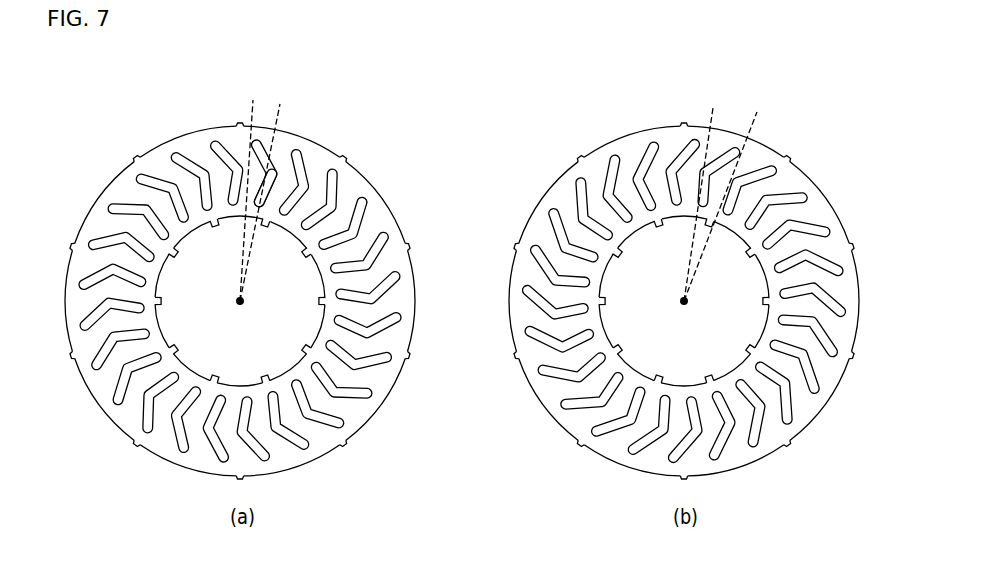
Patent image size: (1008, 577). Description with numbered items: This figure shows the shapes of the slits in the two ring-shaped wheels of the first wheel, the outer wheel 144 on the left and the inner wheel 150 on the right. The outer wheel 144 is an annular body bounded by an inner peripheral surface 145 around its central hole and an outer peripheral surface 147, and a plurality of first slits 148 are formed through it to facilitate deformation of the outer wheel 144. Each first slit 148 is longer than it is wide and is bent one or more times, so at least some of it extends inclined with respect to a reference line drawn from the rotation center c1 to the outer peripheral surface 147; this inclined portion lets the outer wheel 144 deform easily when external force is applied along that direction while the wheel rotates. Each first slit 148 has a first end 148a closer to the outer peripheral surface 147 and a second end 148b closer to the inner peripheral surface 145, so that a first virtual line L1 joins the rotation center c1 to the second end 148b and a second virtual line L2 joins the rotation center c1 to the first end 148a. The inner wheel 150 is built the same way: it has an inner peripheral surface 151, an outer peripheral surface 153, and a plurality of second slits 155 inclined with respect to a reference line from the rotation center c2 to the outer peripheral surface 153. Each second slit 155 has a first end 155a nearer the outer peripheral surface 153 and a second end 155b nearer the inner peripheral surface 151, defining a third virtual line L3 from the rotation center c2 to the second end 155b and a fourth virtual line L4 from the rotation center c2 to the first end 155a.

The outer wheel 144 is at (317, 150).
The inner peripheral surface 145 is at (113, 190).
The outer peripheral surface 147 is at (371, 187).
The first slit 148 is at (212, 150).
The first end 148a is at (257, 146).
The second end 148b is at (262, 203).
The first virtual line L1 is at (269, 192).
The second virtual line L2 is at (251, 190).
The rotation center c1 is at (241, 316).
The inner wheel 150 is at (810, 188).
The inner peripheral surface 151 is at (826, 237).
The outer peripheral surface 153 is at (596, 155).
The second slit 155 is at (643, 170).
The first end 155a is at (740, 156).
The second end 155b is at (675, 172).
The third virtual line L3 is at (704, 193).
The fourth virtual line L4 is at (726, 196).
The rotation center c2 is at (684, 316).